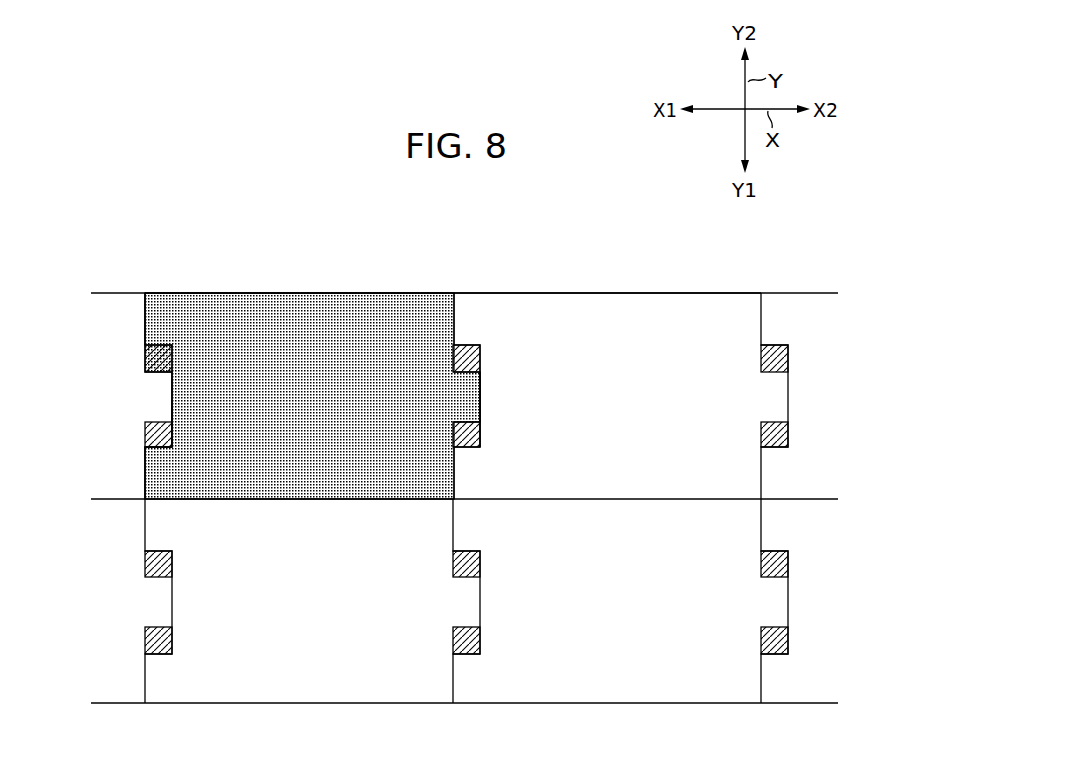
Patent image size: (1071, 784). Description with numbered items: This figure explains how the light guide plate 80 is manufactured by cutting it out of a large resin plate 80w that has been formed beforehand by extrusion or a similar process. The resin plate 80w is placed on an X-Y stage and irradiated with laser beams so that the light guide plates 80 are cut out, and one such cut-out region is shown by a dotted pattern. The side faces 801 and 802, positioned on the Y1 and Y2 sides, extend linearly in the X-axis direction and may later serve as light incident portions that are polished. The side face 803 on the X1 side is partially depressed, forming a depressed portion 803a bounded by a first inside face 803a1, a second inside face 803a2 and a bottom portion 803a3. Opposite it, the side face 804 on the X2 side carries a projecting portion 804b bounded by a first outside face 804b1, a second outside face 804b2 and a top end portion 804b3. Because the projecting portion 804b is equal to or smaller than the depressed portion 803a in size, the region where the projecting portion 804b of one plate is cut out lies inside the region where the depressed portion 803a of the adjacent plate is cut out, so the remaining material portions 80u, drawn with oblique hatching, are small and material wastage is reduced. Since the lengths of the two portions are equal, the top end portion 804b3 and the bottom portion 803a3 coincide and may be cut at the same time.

The light guide plate 80 is at (368, 284).
The resin plate 80w is at (496, 284).
The side face 801 is at (330, 501).
The side face 802 is at (278, 292).
The side face 803 is at (143, 316).
The depressed portion 803a is at (171, 386).
The first inside face 803a1 is at (155, 450).
The second inside face 803a2 is at (158, 352).
The bottom portion 803a3 is at (171, 405).
The side face 804 is at (456, 311).
The projecting portion 804b is at (471, 389).
The first outside face 804b1 is at (480, 440).
The second outside face 804b2 is at (480, 360).
The top end portion 804b3 is at (480, 409).
The remaining material portion 80u is at (145, 352).